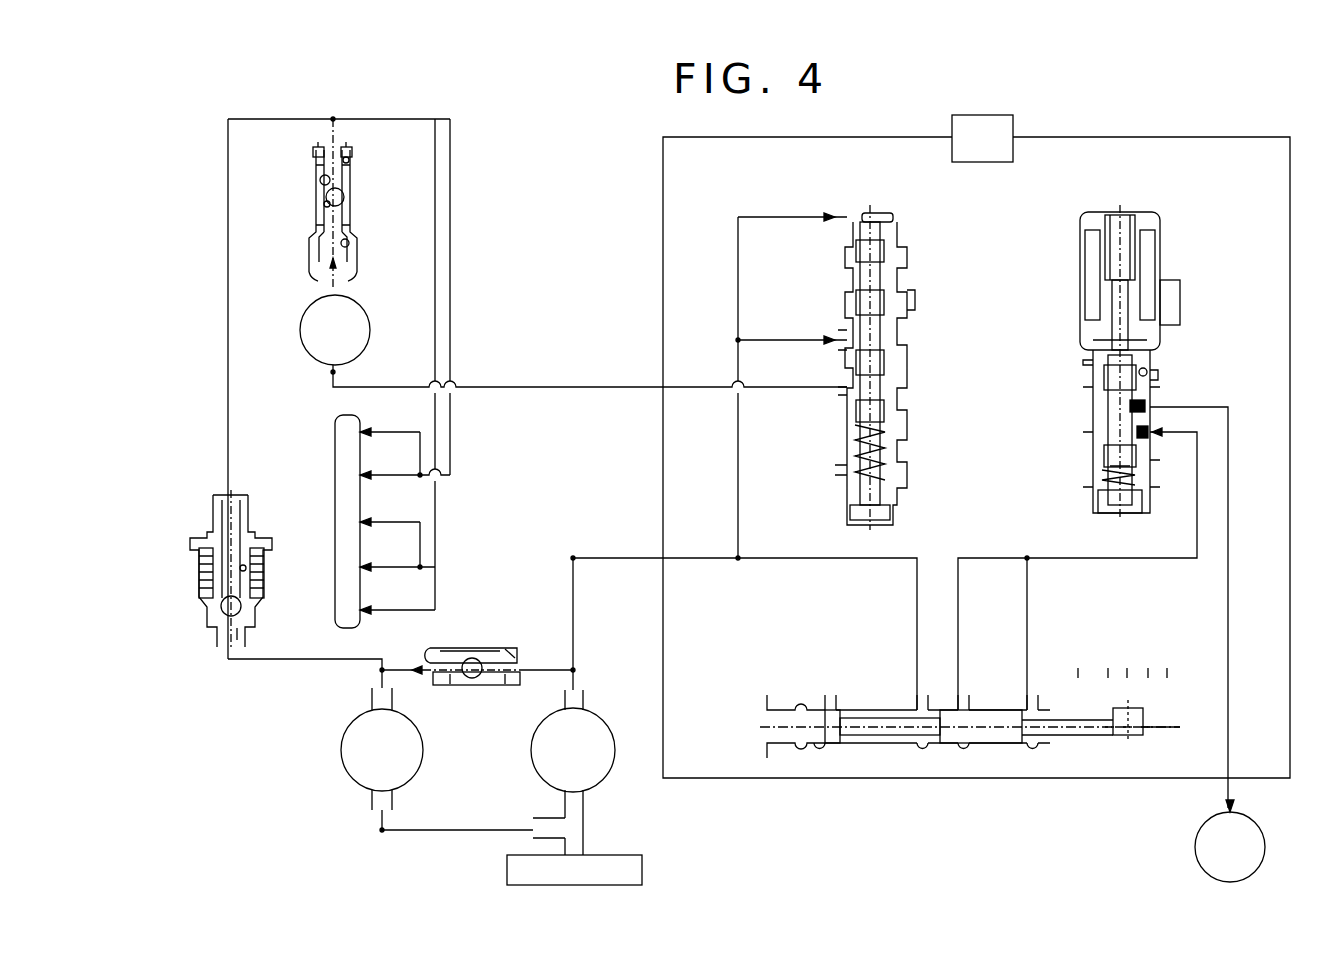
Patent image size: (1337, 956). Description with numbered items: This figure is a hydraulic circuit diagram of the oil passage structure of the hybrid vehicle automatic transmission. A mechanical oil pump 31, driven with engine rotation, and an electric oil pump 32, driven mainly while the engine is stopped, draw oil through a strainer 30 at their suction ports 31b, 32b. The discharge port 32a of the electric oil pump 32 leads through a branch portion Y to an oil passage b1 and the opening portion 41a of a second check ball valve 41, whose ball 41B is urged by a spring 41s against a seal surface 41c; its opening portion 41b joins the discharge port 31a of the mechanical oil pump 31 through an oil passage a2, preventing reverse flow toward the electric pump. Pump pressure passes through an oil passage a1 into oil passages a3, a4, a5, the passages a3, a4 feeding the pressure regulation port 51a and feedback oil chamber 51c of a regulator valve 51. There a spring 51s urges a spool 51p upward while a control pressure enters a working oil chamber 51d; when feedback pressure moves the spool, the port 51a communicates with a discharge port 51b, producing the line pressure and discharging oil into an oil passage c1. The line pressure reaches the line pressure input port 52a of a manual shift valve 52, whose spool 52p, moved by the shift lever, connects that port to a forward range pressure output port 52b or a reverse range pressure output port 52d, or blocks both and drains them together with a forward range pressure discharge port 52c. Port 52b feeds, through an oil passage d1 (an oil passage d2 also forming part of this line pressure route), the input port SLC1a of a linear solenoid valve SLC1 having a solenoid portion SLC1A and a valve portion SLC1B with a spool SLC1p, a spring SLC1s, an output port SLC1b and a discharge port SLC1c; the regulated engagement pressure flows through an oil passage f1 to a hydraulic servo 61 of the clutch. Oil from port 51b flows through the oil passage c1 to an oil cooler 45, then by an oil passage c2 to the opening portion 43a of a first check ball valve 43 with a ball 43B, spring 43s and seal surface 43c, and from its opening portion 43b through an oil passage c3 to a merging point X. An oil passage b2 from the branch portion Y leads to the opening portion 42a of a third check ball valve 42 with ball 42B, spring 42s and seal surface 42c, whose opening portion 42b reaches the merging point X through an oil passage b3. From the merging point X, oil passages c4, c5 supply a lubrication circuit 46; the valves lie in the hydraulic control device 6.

The merging point X is at (333, 119).
The oil passage c3 is at (340, 127).
The oil passage c2 is at (340, 284).
The oil passage c4 is at (452, 182).
The oil passage c5 is at (437, 280).
The oil passage c1 is at (575, 387).
The first check ball valve 43 is at (305, 252).
The spring 43s is at (320, 180).
The ball 43B is at (322, 204).
The opening portion 43b is at (350, 160).
The seal surface 43c is at (345, 194).
The opening portion 43a is at (350, 246).
The oil cooler 45 is at (372, 328).
The lubrication circuit 46 is at (335, 446).
The oil passage b3 is at (230, 388).
The oil passage b2 is at (342, 659).
The oil passage b1 is at (398, 665).
The third check ball valve 42 is at (256, 487).
The opening portion 42b is at (227, 492).
The spring 42s is at (246, 568).
The ball 42B is at (241, 608).
The opening portion 42a is at (243, 640).
The seal surface 42c is at (228, 648).
The second check ball valve 41 is at (472, 640).
The opening portion 41a is at (440, 652).
The spring 41s is at (512, 657).
The ball 41B is at (470, 680).
The seal surface 41c is at (450, 686).
The opening portion 41b is at (497, 685).
The oil passage a2 is at (530, 668).
The oil passage a1 is at (576, 592).
The oil passage a3 is at (740, 470).
The oil passage a4 is at (740, 267).
The oil passage a5 is at (900, 558).
The branch portion Y is at (378, 684).
The electric oil pump 32 is at (424, 752).
The discharge port 32a is at (392, 690).
The suction port 32b is at (392, 800).
The mechanical oil pump 31 is at (616, 755).
The discharge port 31a is at (576, 686).
The suction port 31b is at (585, 820).
The strainer 30 is at (643, 858).
The hydraulic control device 6 is at (1070, 137).
The regulator valve 51 is at (906, 206).
The feedback oil chamber 51c is at (876, 213).
The spool 51p is at (882, 238).
The pressure regulation port 51a is at (838, 335).
The discharge port 51b is at (847, 392).
The spring 51s is at (888, 432).
The working oil chamber 51d is at (887, 483).
The linear solenoid valve SLC1 is at (1160, 212).
The solenoid portion SLC1A is at (1175, 270).
The valve portion SLC1B is at (1175, 345).
The spool SLC1p is at (1108, 378).
The discharge port SLC1c is at (1160, 385).
The output port SLC1b is at (1160, 407).
The spring SLC1s is at (1110, 473).
The input port SLC1a is at (1178, 445).
The oil passage f1 is at (1231, 592).
The oil passage d1 is at (961, 588).
The oil passage d2 is at (1030, 590).
The hydraulic servo 61 is at (1266, 846).
The manual shift valve 52 is at (853, 682).
The spool 52p is at (975, 740).
The reverse range pressure output port 52d is at (823, 695).
The line pressure input port 52a is at (915, 695).
The forward range pressure output port 52b is at (965, 695).
The forward range pressure discharge port 52c is at (1030, 695).